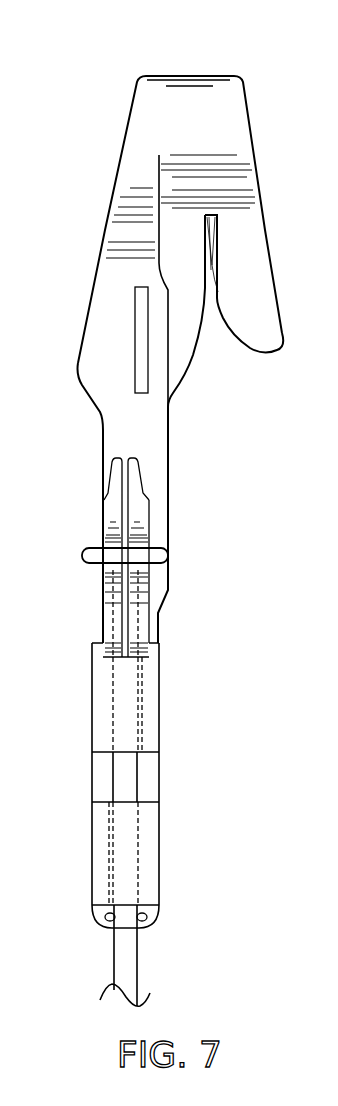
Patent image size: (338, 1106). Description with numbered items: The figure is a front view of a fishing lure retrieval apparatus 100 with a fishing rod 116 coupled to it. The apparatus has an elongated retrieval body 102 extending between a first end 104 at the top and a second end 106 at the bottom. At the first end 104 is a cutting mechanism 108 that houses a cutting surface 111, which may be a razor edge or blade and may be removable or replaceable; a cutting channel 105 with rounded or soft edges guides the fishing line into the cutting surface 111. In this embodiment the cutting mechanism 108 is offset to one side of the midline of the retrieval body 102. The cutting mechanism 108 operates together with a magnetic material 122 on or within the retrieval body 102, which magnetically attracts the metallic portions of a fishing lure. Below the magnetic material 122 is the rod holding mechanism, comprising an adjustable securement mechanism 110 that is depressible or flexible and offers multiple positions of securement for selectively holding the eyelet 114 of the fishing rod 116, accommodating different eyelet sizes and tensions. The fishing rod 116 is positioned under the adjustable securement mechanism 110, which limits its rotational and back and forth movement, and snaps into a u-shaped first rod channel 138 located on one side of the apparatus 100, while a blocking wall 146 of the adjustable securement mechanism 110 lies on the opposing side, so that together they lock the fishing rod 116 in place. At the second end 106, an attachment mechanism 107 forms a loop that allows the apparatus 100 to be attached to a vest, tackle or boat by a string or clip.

The fishing lure retrieval apparatus 100 is at (267, 33).
The retrieval body 102 is at (78, 434).
The first end 104 is at (103, 89).
The cutting channel 105 is at (206, 362).
The second end 106 is at (163, 953).
The attachment mechanism 107 is at (148, 920).
The cutting mechanism 108 is at (290, 180).
The adjustable securement mechanism 110 is at (103, 593).
The cutting surface 111 is at (218, 292).
The eyelet 114 is at (82, 556).
The fishing rod 116 is at (114, 955).
The magnetic material 122 is at (135, 318).
The first rod channel 138 is at (110, 843).
The blocking wall 146 is at (142, 708).